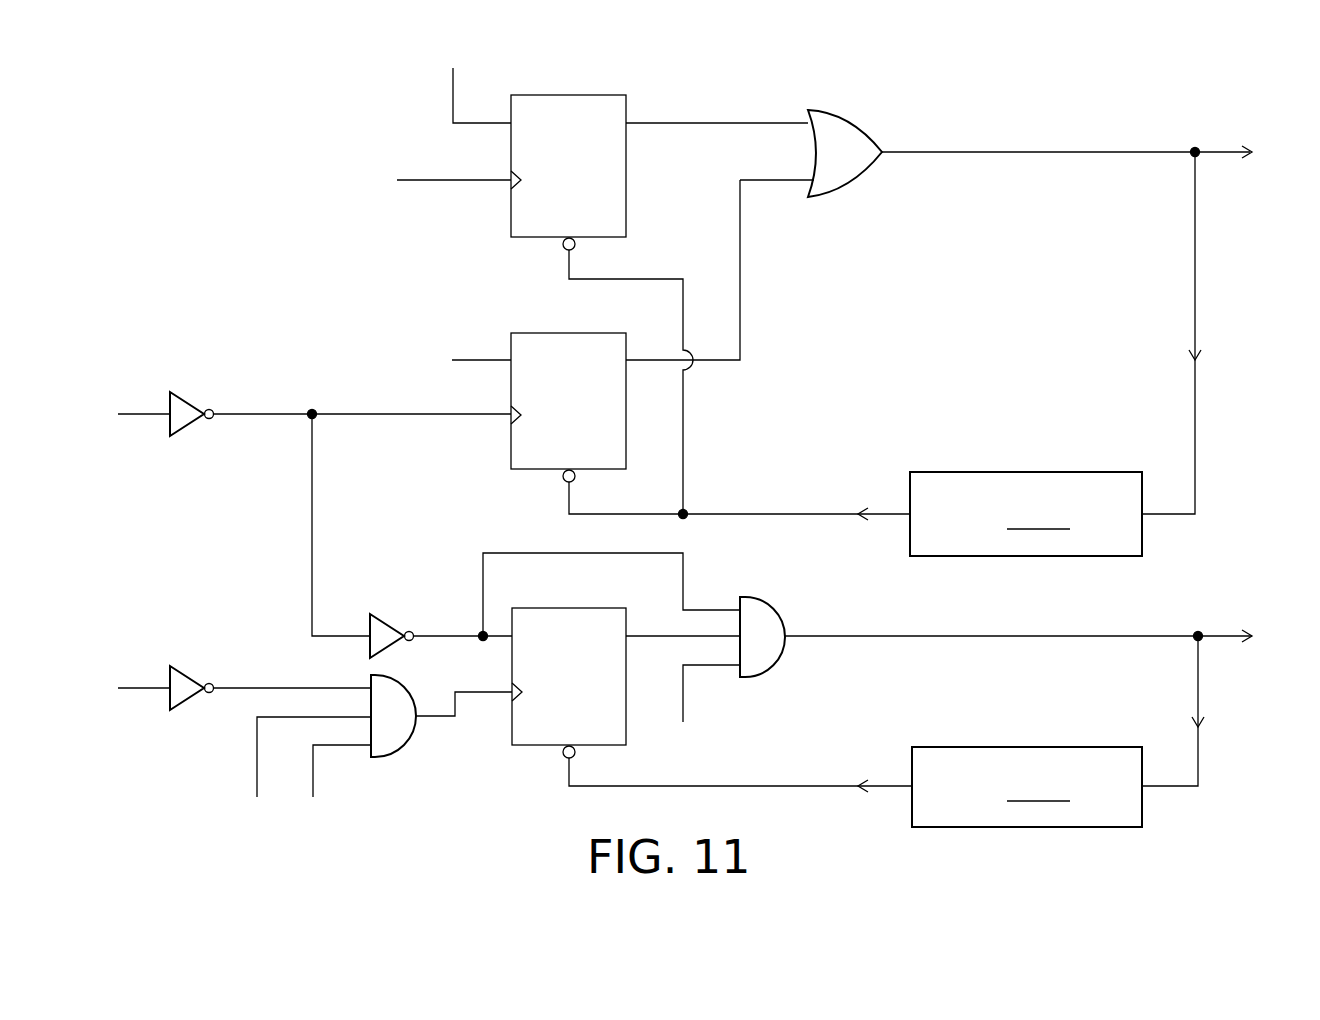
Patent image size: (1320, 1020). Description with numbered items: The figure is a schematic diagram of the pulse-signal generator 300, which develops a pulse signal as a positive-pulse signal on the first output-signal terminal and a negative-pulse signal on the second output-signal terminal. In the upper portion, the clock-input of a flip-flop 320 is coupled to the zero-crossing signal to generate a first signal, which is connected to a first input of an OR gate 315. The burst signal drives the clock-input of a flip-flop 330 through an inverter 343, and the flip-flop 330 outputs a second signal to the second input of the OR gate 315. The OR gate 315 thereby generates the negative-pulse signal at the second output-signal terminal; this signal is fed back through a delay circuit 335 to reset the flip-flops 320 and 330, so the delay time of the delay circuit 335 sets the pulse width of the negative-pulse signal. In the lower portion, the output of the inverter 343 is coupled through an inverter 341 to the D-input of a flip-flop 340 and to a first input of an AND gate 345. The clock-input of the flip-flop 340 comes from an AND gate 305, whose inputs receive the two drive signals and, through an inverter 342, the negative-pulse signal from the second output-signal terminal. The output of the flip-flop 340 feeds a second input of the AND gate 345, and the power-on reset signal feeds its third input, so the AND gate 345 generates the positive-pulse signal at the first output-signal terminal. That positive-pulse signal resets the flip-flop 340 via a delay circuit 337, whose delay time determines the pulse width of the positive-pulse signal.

The pulse-signal generator 300 is at (220, 66).
The AND gate 305 is at (382, 758).
The OR gate 315 is at (846, 122).
The flip-flop 320 is at (568, 95).
The flip-flop 330 is at (568, 333).
The delay circuit 335 is at (1055, 472).
The delay circuit 337 is at (1057, 747).
The flip-flop 340 is at (570, 608).
The inverter 341 is at (388, 615).
The inverter 342 is at (188, 670).
The inverter 343 is at (187, 398).
The AND gate 345 is at (752, 598).